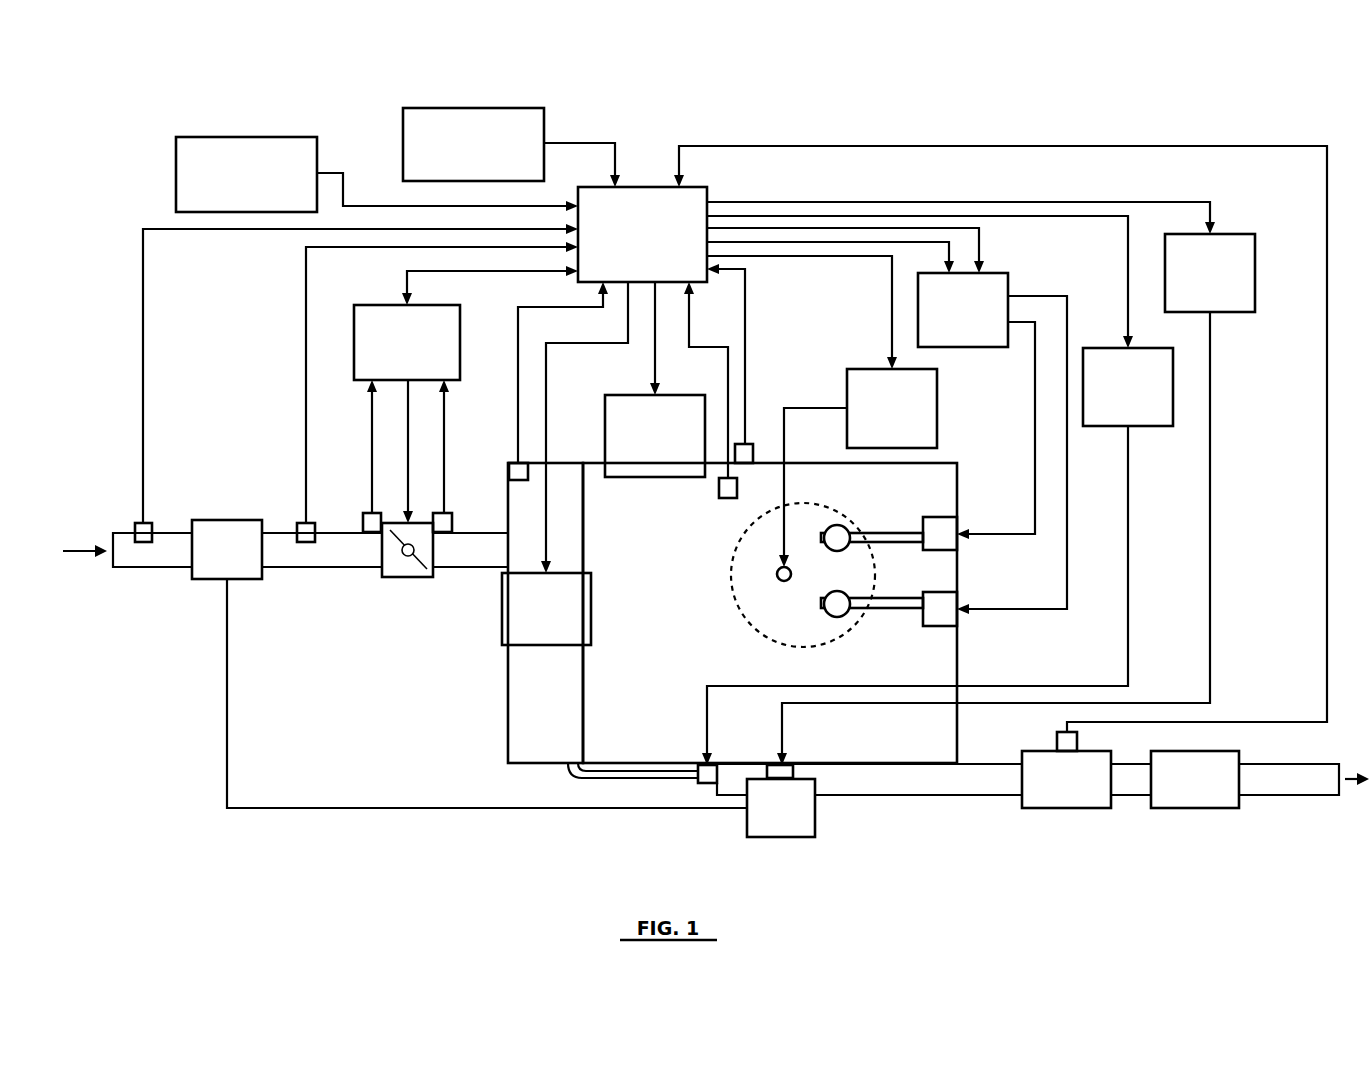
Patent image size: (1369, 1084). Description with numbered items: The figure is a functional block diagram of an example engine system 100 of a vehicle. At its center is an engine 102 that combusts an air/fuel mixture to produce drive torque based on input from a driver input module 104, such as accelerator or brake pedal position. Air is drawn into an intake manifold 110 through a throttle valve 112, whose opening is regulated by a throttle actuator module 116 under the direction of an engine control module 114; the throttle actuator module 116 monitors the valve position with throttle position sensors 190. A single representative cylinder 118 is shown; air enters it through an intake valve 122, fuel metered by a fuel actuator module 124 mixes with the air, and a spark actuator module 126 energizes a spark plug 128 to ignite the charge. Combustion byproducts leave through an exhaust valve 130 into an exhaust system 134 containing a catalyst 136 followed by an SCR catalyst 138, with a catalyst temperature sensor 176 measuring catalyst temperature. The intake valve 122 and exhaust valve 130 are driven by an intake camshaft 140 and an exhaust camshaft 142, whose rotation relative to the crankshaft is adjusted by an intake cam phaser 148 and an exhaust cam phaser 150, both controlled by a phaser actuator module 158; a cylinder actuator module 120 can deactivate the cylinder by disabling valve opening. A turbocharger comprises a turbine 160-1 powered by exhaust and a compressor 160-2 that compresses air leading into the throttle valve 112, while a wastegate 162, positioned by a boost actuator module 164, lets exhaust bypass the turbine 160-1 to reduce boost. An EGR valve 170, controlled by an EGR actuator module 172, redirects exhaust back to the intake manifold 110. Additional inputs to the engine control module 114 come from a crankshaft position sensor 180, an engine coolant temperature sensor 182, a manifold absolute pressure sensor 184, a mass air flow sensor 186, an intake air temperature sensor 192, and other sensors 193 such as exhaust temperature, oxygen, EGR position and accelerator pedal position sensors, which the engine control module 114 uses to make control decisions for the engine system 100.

The engine system 100 is at (88, 100).
The engine 102 is at (957, 468).
The driver input module 104 is at (403, 143).
The intake manifold 110 is at (508, 696).
The throttle valve 112 is at (409, 578).
The engine control module 114 is at (707, 190).
The throttle actuator module 116 is at (378, 305).
The cylinder 118 is at (757, 636).
The cylinder actuator module 120 is at (672, 395).
The intake valve 122 is at (837, 523).
The fuel actuator module 124 is at (575, 645).
The spark actuator module 126 is at (937, 408).
The spark plug 128 is at (777, 576).
The exhaust valve 130 is at (837, 617).
The exhaust system 134 is at (1303, 862).
The catalyst 136 is at (1068, 808).
The SCR catalyst 138 is at (1195, 808).
The intake camshaft 140 is at (893, 533).
The exhaust camshaft 142 is at (887, 608).
The intake cam phaser 148 is at (940, 517).
The exhaust cam phaser 150 is at (950, 626).
The phaser actuator module 158 is at (1008, 285).
The turbine 160-1 is at (815, 815).
The compressor 160-2 is at (214, 579).
The wastegate 162 is at (793, 770).
The boost actuator module 164 is at (1232, 312).
The EGR valve 170 is at (707, 783).
The EGR actuator module 172 is at (1150, 426).
The catalyst temperature sensor 176 is at (1057, 740).
The crankshaft position sensor 180 is at (748, 444).
The engine coolant temperature sensor 182 is at (728, 498).
The manifold absolute pressure sensor 184 is at (509, 463).
The mass air flow sensor 186 is at (297, 523).
The throttle position sensors 190 is at (372, 533).
The intake air temperature sensor 192 is at (135, 523).
The other sensors 193 is at (176, 173).